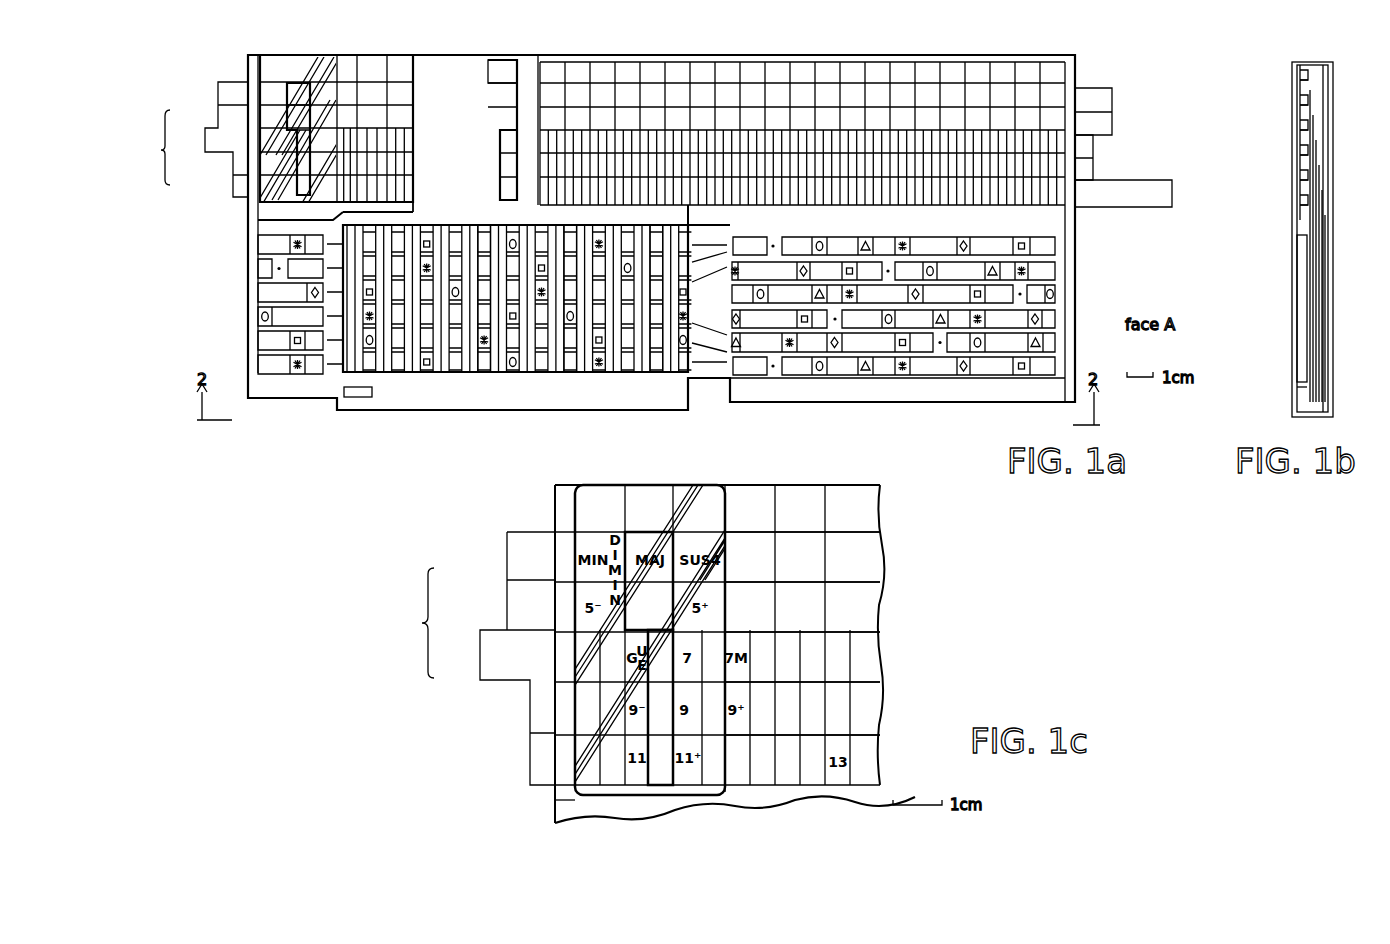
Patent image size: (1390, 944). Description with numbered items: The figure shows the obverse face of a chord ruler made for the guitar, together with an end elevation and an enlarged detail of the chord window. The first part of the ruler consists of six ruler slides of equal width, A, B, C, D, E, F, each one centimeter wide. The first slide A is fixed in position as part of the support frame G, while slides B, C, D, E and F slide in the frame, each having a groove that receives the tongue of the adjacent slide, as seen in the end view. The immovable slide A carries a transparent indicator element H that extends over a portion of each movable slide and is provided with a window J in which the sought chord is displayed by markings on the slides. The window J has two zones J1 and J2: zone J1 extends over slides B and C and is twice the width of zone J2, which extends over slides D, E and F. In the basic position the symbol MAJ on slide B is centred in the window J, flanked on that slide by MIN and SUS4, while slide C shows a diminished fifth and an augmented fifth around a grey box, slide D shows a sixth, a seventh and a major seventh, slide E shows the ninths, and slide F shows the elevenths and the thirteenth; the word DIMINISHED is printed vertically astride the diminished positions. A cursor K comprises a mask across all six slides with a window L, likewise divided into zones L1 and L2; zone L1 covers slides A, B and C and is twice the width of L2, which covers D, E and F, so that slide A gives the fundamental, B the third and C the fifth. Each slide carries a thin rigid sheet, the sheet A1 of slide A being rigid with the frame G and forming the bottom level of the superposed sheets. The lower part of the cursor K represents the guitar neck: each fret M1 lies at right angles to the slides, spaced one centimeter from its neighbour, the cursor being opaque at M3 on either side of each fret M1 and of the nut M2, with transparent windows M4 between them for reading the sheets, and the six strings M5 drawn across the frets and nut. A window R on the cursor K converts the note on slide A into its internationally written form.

In FIG. 1a, the indicator element H is at (278, 69).
In FIG. 1c, the indicator element H is at (593, 505).
In FIG. 1a, the window J is at (155, 158).
In FIG. 1c, the window J is at (412, 636).
In FIG. 1a, the first window zone J1 is at (285, 90).
In FIG. 1c, the first window zone J1 is at (600, 580).
In FIG. 1a, the second window zone J2 is at (293, 165).
In FIG. 1c, the second window zone J2 is at (648, 692).
In FIG. 1a, the cursor K is at (433, 80).
In FIG. 1a, the cursor window L is at (517, 120).
In FIG. 1a, the first cursor window zone L1 is at (488, 88).
In FIG. 1a, the second cursor window zone L2 is at (500, 185).
In FIG. 1a, the first ruler slide A is at (1190, 75).
In FIG. 1b, the first ruler slide A is at (1360, 78).
In FIG. 1c, the first ruler slide A is at (927, 512).
In FIG. 1a, the second ruler slide B is at (1190, 100).
In FIG. 1b, the second ruler slide B is at (1360, 102).
In FIG. 1c, the second ruler slide B is at (927, 560).
In FIG. 1a, the third ruler slide C is at (1190, 123).
In FIG. 1b, the third ruler slide C is at (1360, 125).
In FIG. 1c, the third ruler slide C is at (927, 608).
In FIG. 1a, the fourth ruler slide D is at (1190, 147).
In FIG. 1b, the fourth ruler slide D is at (1360, 148).
In FIG. 1c, the fourth ruler slide D is at (927, 660).
In FIG. 1a, the fifth ruler slide E is at (1190, 168).
In FIG. 1b, the fifth ruler slide E is at (1360, 170).
In FIG. 1c, the fifth ruler slide E is at (927, 712).
In FIG. 1a, the sixth ruler slide F is at (1190, 193).
In FIG. 1b, the sixth ruler slide F is at (1360, 195).
In FIG. 1c, the sixth ruler slide F is at (927, 763).
In FIG. 1a, the support frame G is at (1112, 283).
In FIG. 1b, the support frame G is at (1293, 268).
In FIG. 1c, the support frame G is at (563, 800).
In FIG. 1a, the fret M1 is at (462, 363).
In FIG. 1a, the nut M2 is at (665, 410).
In FIG. 1a, the opaque zone M3 is at (565, 363).
In FIG. 1a, the window M4 is at (513, 410).
In FIG. 1a, the string M5 is at (720, 413).
In FIG. 1a, the window R is at (350, 418).
In FIG. 1b, the rigid sheet A1 is at (1313, 273).